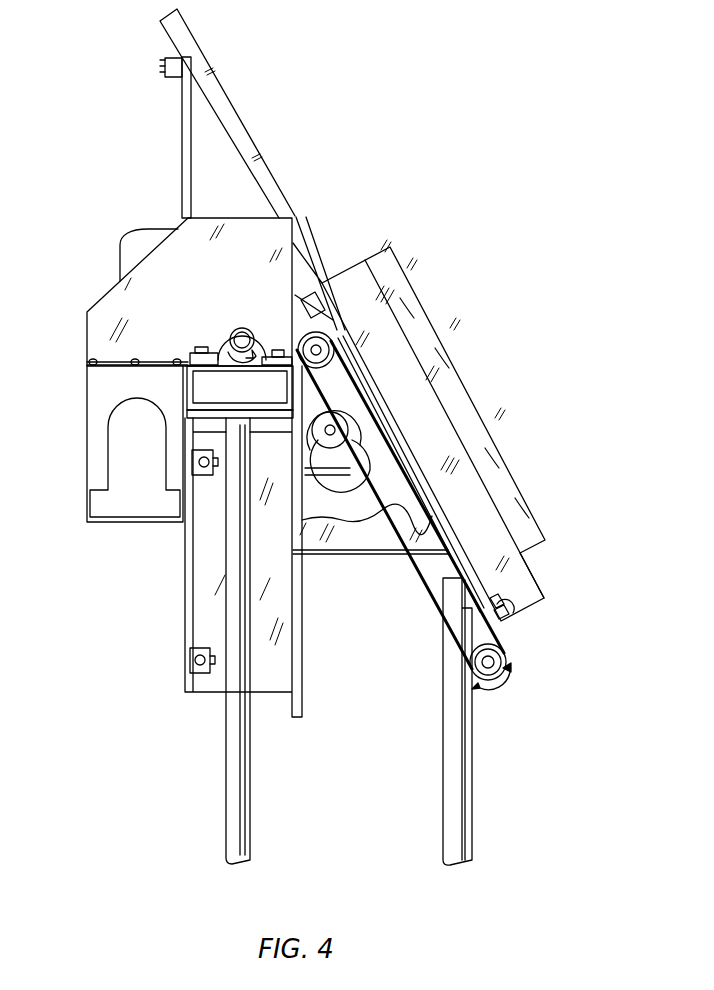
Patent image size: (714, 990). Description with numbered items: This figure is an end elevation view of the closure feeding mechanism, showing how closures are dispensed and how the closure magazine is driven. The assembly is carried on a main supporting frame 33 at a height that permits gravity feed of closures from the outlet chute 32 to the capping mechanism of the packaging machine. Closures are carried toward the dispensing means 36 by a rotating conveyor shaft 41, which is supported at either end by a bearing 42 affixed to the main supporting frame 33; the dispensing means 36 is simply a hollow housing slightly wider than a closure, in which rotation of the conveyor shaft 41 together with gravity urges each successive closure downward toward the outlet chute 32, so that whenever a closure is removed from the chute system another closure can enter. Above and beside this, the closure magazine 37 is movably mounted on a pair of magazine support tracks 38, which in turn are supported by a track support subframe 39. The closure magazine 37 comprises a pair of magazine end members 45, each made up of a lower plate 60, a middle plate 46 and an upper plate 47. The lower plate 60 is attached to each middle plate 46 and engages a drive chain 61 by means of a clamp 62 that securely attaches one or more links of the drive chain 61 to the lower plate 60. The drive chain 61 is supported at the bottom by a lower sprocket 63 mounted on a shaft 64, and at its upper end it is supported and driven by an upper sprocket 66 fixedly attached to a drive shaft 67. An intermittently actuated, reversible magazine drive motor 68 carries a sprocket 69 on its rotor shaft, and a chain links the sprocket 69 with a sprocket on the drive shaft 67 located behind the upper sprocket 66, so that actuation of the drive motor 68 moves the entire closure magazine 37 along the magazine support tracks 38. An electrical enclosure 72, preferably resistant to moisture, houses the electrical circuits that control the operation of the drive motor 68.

The outlet chute 32 is at (87, 385).
The main supporting frame 33 is at (215, 377).
The dispensing means 36 is at (199, 286).
The closure magazine 37 is at (514, 426).
The magazine support tracks 38 is at (241, 115).
The track support subframe 39 is at (180, 129).
The conveyor shaft 41 is at (232, 334).
The bearing 42 is at (245, 320).
The magazine end member 45 is at (552, 567).
The middle plate 46 is at (440, 433).
The upper plate 47 is at (440, 360).
The lower plate 60 is at (425, 492).
The drive chain 61 is at (454, 580).
The clamp 62 is at (515, 616).
The lower sprocket 63 is at (506, 657).
The shaft 64 is at (497, 688).
The upper sprocket 66 is at (327, 328).
The drive shaft 67 is at (333, 350).
The magazine drive motor 68 is at (348, 492).
The sprocket 69 is at (313, 439).
The electrical enclosure 72 is at (280, 616).